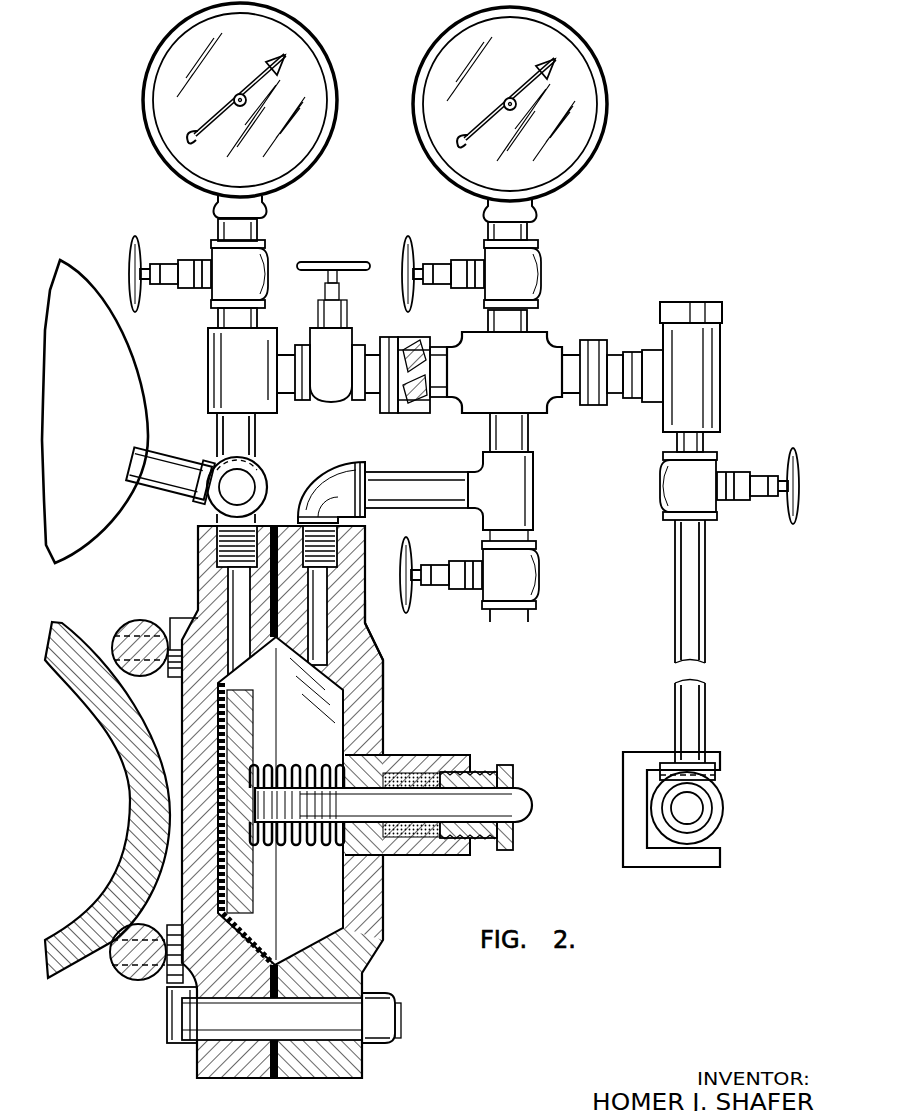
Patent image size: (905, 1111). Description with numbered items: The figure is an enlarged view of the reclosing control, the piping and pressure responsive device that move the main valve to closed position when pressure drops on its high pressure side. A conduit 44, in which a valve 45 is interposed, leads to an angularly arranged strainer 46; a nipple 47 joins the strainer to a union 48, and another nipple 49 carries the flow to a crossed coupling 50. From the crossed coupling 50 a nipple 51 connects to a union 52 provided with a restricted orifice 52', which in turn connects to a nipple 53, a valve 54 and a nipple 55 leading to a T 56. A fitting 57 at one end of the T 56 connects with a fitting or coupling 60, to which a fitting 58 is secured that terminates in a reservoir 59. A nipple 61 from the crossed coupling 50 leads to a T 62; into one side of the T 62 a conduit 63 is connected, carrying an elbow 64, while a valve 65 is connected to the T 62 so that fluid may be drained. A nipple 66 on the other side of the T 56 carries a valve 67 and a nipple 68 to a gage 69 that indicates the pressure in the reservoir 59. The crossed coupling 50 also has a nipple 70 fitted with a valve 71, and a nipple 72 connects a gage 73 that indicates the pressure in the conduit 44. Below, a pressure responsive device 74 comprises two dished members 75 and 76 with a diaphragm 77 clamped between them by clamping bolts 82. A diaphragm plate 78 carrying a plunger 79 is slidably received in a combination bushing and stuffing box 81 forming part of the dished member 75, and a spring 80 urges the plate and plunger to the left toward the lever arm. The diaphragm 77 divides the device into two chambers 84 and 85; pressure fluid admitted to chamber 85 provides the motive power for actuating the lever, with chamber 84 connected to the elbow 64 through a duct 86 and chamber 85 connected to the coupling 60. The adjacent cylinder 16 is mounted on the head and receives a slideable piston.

The cylinder 16 is at (125, 800).
The conduit 44 is at (705, 444).
The valve 45 is at (663, 488).
The strainer 46 is at (718, 366).
The nipple 47 is at (636, 400).
The union 48 is at (611, 405).
The nipple 49 is at (596, 345).
The crossed coupling 50 is at (532, 410).
The nipple 51 is at (445, 350).
The union 52 is at (420, 356).
The restricted orifice 52' is at (376, 388).
The nipple 53 is at (360, 348).
The valve 54 is at (312, 340).
The nipple 55 is at (292, 400).
The T 56 is at (208, 366).
The fitting 57 is at (255, 432).
The fitting 58 is at (165, 492).
The reservoir 59 is at (62, 260).
The fitting or coupling 60 is at (262, 478).
The nipple 61 is at (490, 440).
The T 62 is at (533, 492).
The conduit 63 is at (414, 474).
The elbow 64 is at (325, 472).
The valve 65 is at (540, 576).
The nipple 66 is at (218, 318).
The valve 67 is at (213, 254).
The nipple 68 is at (258, 228).
The gage 69 is at (330, 72).
The nipple 70 is at (528, 322).
The valve 71 is at (540, 270).
The nipple 72 is at (528, 233).
The gage 73 is at (598, 75).
The pressure responsive device 74 is at (388, 686).
The dished member 75 is at (365, 650).
The dished member 76 is at (197, 1062).
The diaphragm 77 is at (258, 688).
The diaphragm plate 78 is at (240, 880).
The plunger 79 is at (530, 805).
The spring 80 is at (284, 765).
The combination bushing and stuffing box 81 is at (440, 755).
The clamping bolts 82 is at (385, 992).
The chamber 84 is at (345, 740).
The chamber 85 is at (200, 585).
The duct 86 is at (330, 608).